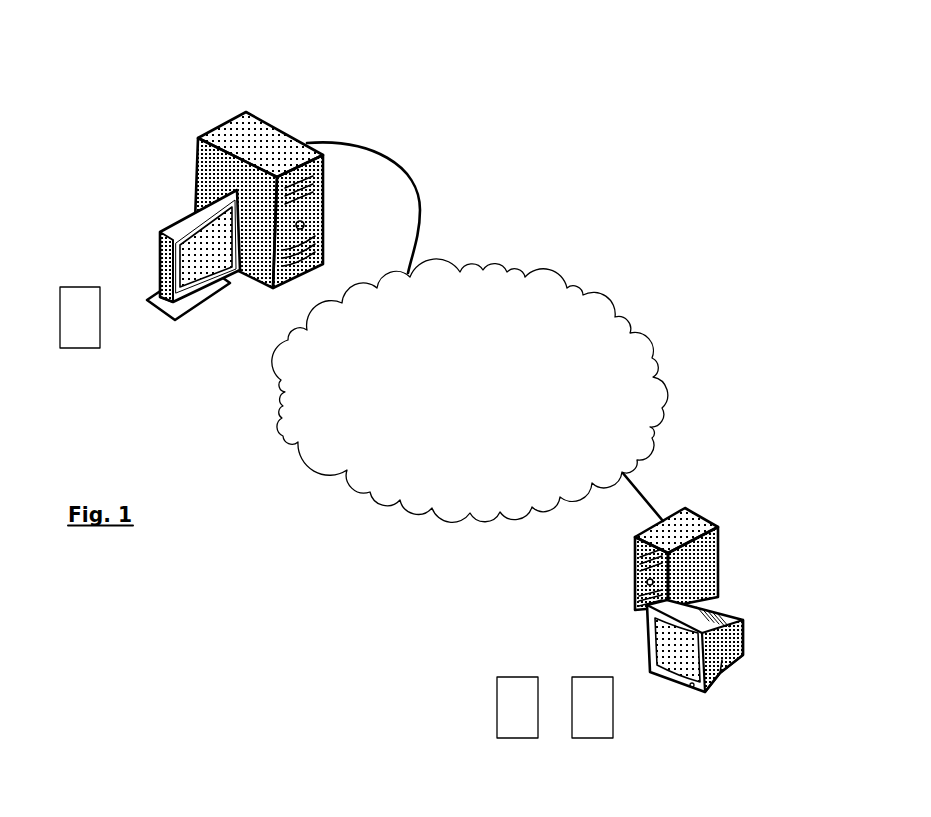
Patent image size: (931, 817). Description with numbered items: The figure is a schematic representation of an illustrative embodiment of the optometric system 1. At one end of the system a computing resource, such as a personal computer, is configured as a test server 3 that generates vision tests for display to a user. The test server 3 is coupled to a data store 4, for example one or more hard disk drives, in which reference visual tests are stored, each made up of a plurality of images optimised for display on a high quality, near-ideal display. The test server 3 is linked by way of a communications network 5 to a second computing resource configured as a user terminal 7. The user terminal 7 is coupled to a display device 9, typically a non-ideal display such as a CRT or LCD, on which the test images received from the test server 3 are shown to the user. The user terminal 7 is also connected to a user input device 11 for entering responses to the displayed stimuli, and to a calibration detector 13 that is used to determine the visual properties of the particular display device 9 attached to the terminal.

The optometric system 1 is at (650, 230).
The test server 3 is at (267, 120).
The data store 4 is at (200, 185).
The communications network 5 is at (485, 410).
The user terminal 7 is at (690, 530).
The display device 9 is at (728, 672).
The user input device 11 is at (635, 580).
The calibration detector 13 is at (635, 575).